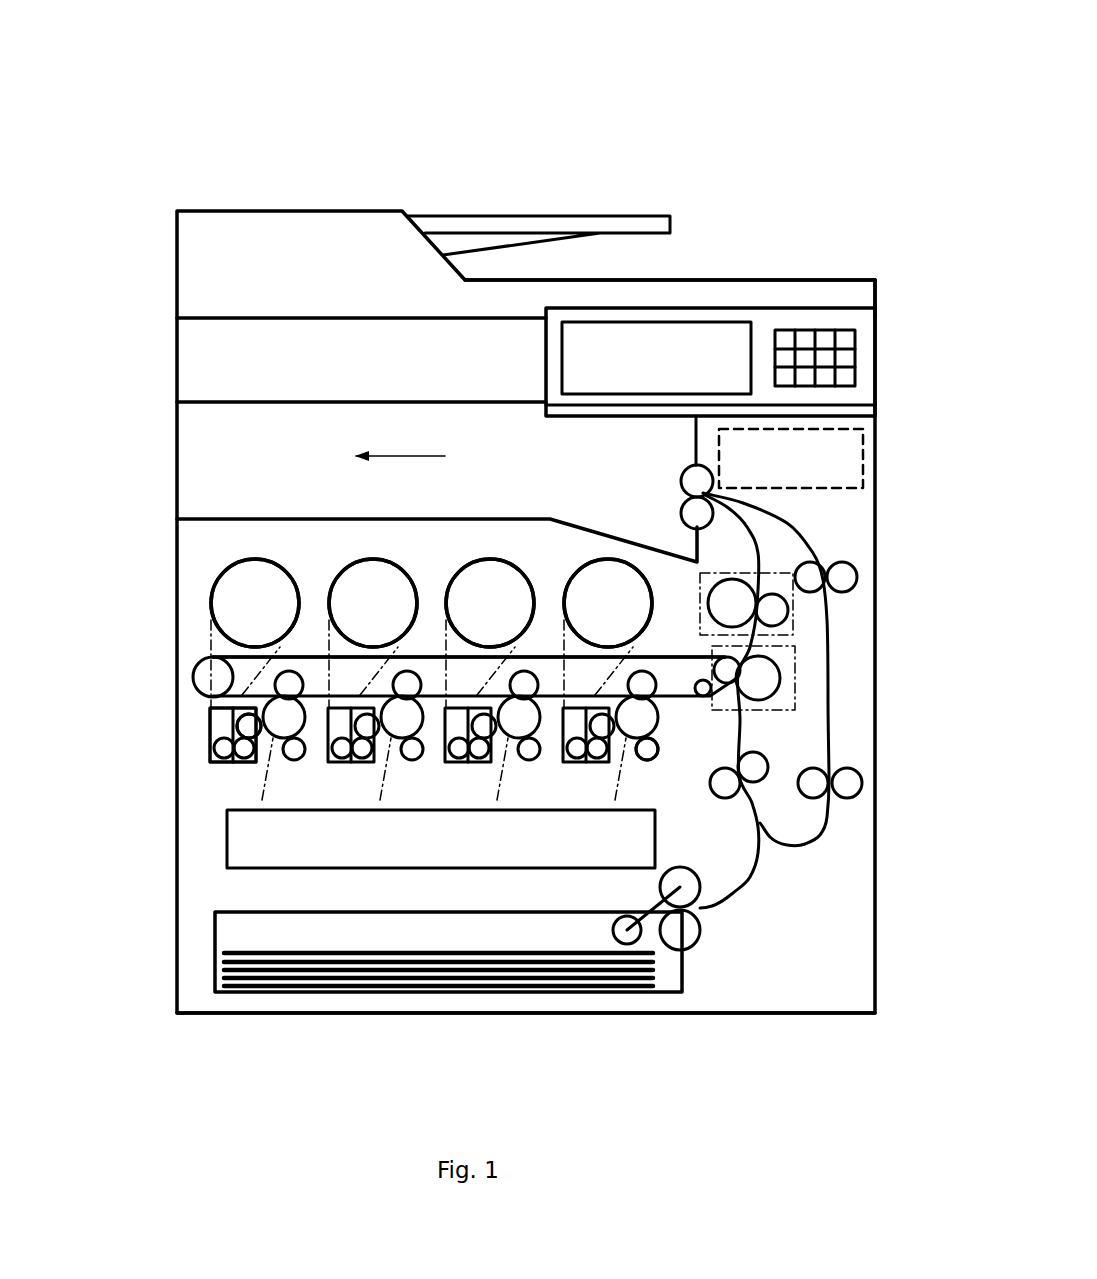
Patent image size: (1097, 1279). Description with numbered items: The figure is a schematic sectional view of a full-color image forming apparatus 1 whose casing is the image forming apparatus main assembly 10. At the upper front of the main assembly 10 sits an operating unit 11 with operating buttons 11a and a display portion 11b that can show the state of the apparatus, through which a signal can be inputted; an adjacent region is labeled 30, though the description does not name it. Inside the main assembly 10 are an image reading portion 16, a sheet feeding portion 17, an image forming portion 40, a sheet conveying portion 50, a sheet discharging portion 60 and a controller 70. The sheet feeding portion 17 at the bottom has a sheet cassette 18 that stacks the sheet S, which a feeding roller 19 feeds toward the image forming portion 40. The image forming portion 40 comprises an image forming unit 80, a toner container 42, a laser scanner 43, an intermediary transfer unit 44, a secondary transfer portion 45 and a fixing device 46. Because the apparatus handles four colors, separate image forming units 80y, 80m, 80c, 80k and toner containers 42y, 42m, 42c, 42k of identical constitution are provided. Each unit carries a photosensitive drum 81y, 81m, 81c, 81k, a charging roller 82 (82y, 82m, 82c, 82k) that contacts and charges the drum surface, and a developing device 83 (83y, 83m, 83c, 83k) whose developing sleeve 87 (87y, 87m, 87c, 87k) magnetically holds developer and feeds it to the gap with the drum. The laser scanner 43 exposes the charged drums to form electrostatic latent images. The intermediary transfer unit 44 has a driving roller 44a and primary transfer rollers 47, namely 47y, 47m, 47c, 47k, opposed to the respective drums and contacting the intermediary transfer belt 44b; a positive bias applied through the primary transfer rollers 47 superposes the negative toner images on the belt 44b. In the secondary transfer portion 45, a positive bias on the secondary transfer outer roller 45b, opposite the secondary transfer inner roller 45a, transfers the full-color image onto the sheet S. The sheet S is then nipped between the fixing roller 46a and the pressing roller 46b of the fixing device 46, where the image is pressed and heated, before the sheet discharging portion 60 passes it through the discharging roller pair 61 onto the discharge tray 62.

The image forming apparatus 1 is at (733, 103).
The image forming apparatus main assembly 10 is at (177, 440).
The operating unit 11 is at (732, 302).
The operating buttons 11a is at (805, 333).
The display portion 11b is at (572, 365).
The image reading portion 16 is at (306, 178).
The sheet feeding portion 17 is at (808, 957).
The sheet cassette 18 is at (215, 945).
The feeding roller 19 is at (700, 932).
The image reading unit 30 is at (872, 320).
The image forming portion 40 is at (154, 668).
The toner container 42 is at (200, 580).
The toner container 42y is at (265, 560).
The toner container 42m is at (380, 560).
The toner container 42c is at (490, 560).
The toner container 42k is at (612, 560).
The laser scanner 43 is at (227, 850).
The intermediary transfer unit 44 is at (315, 574).
The driving roller 44a is at (197, 693).
The intermediary transfer belt 44b is at (425, 653).
The secondary transfer portion 45 is at (795, 690).
The secondary transfer inner roller 45a is at (727, 684).
The secondary transfer outer roller 45b is at (760, 701).
The fixing device 46 is at (793, 613).
The fixing roller 46a is at (713, 580).
The pressing roller 46b is at (785, 626).
The primary transfer roller 47 is at (670, 677).
The primary transfer roller 47y is at (299, 612).
The primary transfer roller 47m is at (417, 612).
The primary transfer roller 47c is at (534, 612).
The primary transfer roller 47k is at (652, 612).
The sheet conveying portion 50 is at (856, 532).
The sheet discharging portion 60 is at (526, 456).
The discharging roller pair 61 is at (690, 522).
The discharge tray 62 is at (552, 518).
The controller 70 is at (863, 463).
The image forming unit 80 is at (200, 725).
The image forming unit 80y is at (283, 815).
The image forming unit 80m is at (402, 815).
The image forming unit 80c is at (519, 815).
The image forming unit 80k is at (641, 817).
The photosensitive drum 81y is at (282, 735).
The photosensitive drum 81m is at (400, 735).
The photosensitive drum 81c is at (517, 735).
The photosensitive drum 81k is at (635, 735).
The charging roller 82 is at (680, 766).
The charging roller 82y is at (307, 760).
The charging roller 82m is at (425, 760).
The charging roller 82c is at (542, 760).
The charging roller 82k is at (655, 758).
The developing device 83 is at (200, 745).
The developing device 83y is at (243, 767).
The developing device 83m is at (351, 764).
The developing device 83c is at (468, 764).
The developing device 83k is at (586, 764).
The developing sleeve 87 is at (240, 788).
The developing sleeve 87y is at (269, 766).
The developing sleeve 87m is at (387, 766).
The developing sleeve 87c is at (504, 766).
The developing sleeve 87k is at (622, 766).
The sheet S is at (428, 953).